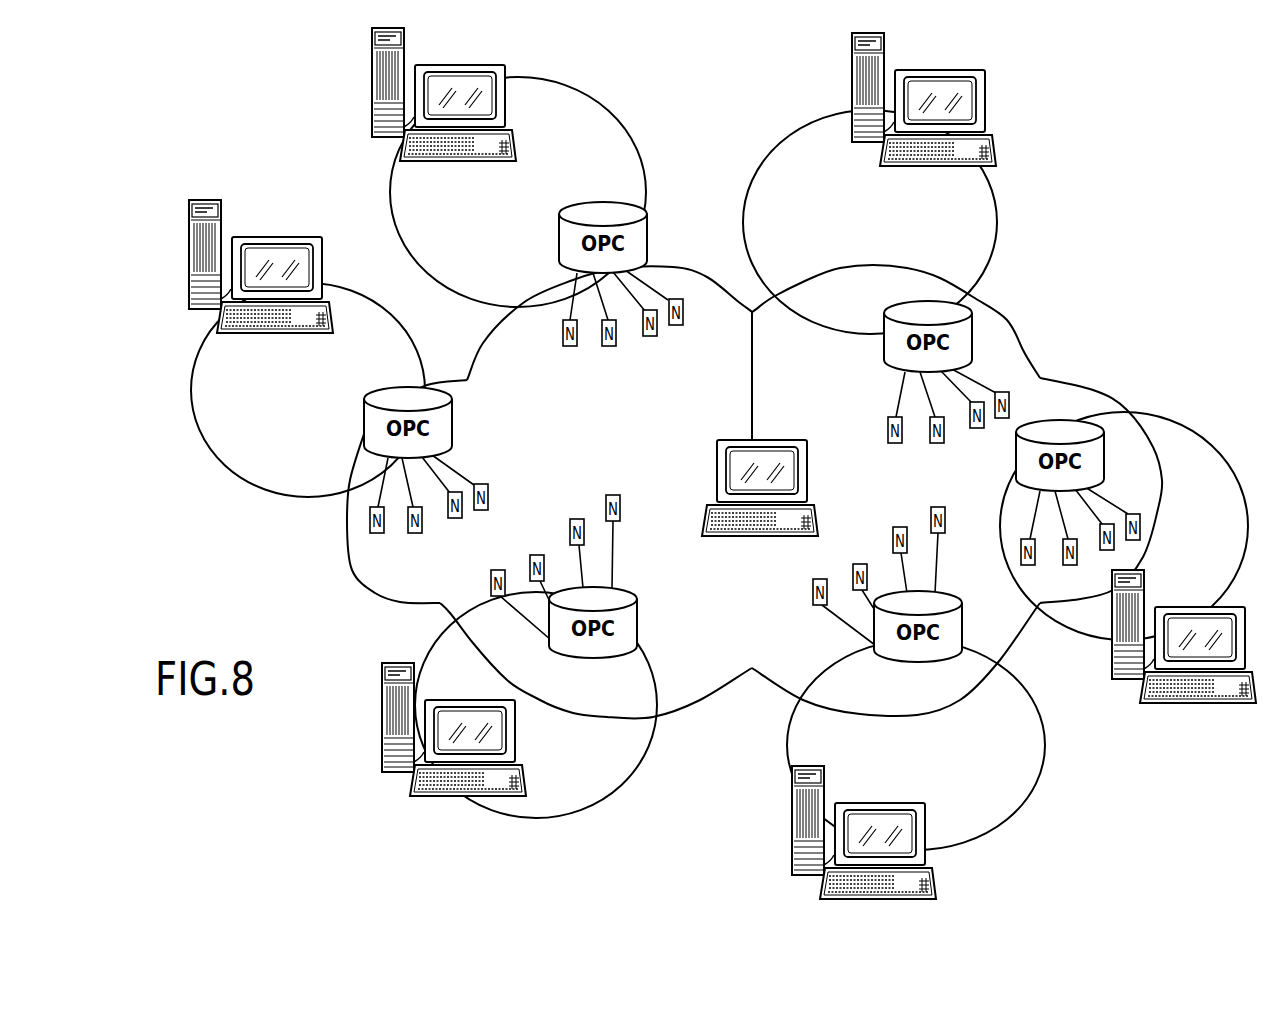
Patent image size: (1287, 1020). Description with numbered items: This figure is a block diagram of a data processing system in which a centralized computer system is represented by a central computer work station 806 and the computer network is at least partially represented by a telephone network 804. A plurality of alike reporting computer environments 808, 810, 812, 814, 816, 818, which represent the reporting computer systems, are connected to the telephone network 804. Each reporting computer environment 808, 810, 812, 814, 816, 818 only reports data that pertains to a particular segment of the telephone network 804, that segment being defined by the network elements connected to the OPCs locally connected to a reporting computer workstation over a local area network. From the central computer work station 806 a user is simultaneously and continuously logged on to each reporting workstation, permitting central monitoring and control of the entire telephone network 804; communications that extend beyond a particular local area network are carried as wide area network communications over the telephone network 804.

The telephone network 804 is at (690, 272).
The computer work station 806 is at (718, 476).
The reporting computer environment 808 is at (1195, 427).
The reporting computer environment 810 is at (1040, 780).
The reporting computer environment 812 is at (640, 762).
The reporting computer environment 814 is at (200, 412).
The reporting computer environment 816 is at (587, 79).
The reporting computer environment 818 is at (999, 228).